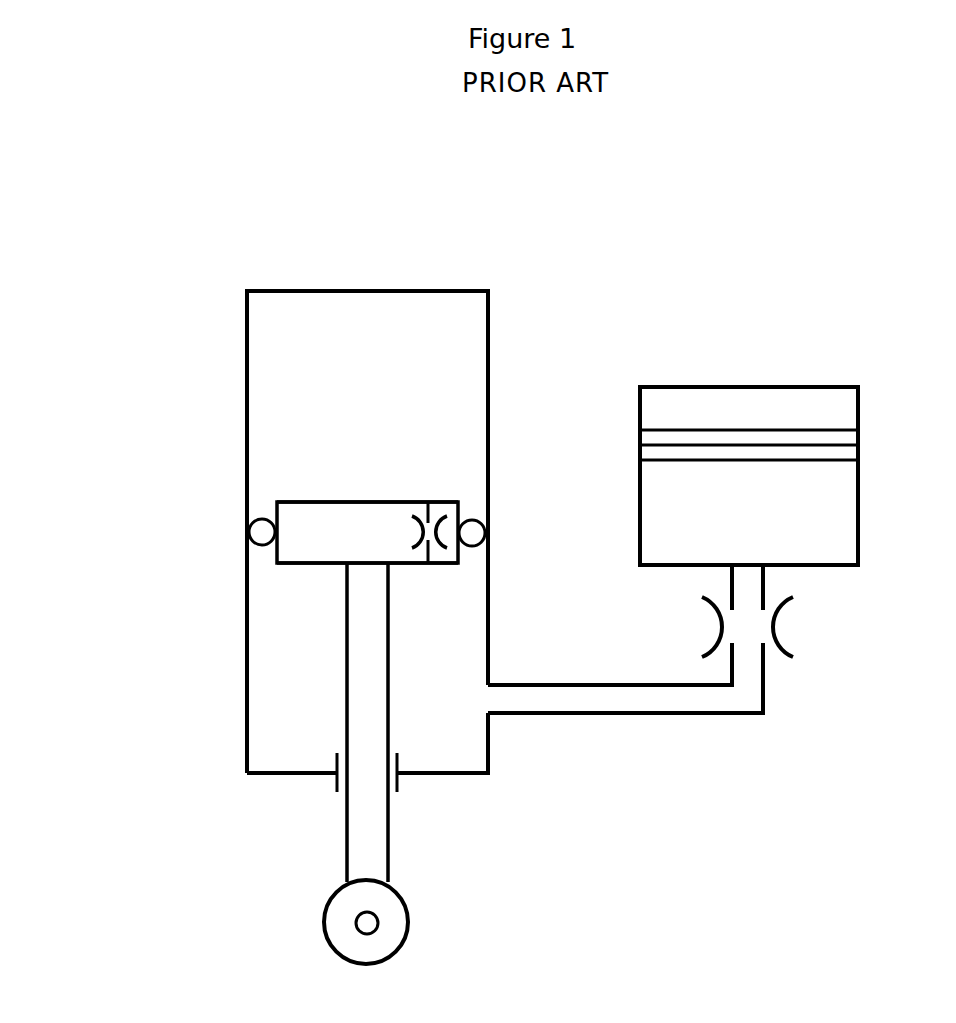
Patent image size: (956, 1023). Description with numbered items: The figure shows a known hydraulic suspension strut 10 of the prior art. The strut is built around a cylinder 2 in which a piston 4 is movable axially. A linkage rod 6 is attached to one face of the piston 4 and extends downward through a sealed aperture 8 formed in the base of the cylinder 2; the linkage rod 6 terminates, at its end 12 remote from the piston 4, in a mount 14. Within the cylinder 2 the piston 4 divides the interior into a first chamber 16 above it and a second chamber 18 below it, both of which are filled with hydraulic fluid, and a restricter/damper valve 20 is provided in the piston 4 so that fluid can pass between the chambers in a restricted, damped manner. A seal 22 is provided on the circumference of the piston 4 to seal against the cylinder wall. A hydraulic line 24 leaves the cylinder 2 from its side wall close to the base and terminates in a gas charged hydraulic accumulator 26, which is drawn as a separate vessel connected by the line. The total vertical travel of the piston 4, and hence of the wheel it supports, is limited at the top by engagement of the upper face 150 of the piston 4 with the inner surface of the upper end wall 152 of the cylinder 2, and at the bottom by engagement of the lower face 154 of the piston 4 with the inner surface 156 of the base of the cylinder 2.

The hydraulic suspension strut 10 is at (646, 229).
The cylinder 2 is at (247, 580).
The piston 4 is at (318, 532).
The linkage rod 6 is at (357, 840).
The sealed aperture 8 is at (320, 765).
The end 12 is at (343, 882).
The mount 14 is at (368, 902).
The first chamber 16 is at (427, 432).
The second chamber 18 is at (298, 683).
The restricter/damper valve 20 is at (457, 502).
The seal 22 is at (250, 523).
The hydraulic line 24 is at (700, 705).
The gas charged hydraulic accumulator 26 is at (638, 558).
The upper face 150 is at (333, 500).
The upper end wall 152 is at (437, 291).
The lower face 154 is at (393, 567).
The inner surface 156 is at (457, 775).